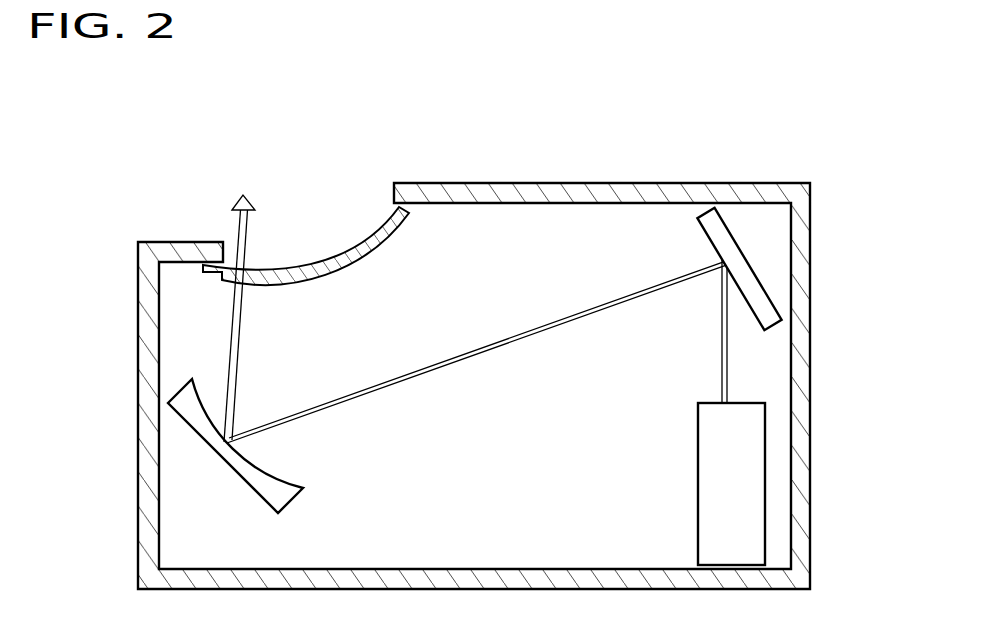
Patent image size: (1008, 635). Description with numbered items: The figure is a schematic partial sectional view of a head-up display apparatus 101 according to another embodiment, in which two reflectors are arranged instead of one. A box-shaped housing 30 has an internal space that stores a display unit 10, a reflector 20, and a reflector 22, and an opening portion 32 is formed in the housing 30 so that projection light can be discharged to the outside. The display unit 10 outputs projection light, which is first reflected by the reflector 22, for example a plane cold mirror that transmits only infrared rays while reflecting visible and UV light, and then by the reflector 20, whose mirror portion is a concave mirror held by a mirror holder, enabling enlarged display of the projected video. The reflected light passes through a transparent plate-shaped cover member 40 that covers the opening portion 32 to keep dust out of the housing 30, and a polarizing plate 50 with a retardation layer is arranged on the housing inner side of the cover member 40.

The head-up display apparatus 101 is at (490, 328).
The housing 30 is at (503, 192).
The opening portion 32 is at (340, 202).
The cover member 40 is at (340, 229).
The polarizing plate 50 is at (372, 250).
The reflector 20 is at (197, 420).
The reflector 22 is at (752, 284).
The display unit 10 is at (748, 503).